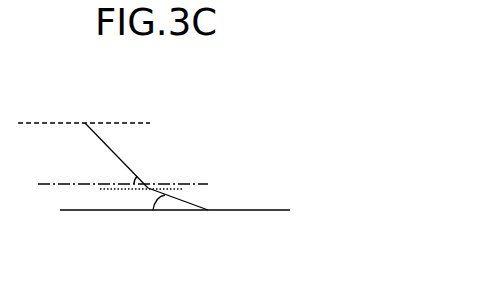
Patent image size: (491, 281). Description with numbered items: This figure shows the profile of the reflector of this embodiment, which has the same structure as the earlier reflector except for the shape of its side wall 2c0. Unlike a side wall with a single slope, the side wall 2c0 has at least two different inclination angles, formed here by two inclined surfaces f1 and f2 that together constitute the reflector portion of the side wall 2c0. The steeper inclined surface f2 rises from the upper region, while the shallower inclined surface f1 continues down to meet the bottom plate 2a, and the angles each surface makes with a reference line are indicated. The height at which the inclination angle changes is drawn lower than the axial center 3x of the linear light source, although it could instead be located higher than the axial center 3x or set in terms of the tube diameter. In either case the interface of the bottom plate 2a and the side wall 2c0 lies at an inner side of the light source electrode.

The side wall 2c0 is at (108, 146).
The inclined surface f2 is at (127, 167).
The inclined surface f1 is at (187, 202).
The axial center 3x is at (45, 186).
The bottom plate 2a is at (245, 211).